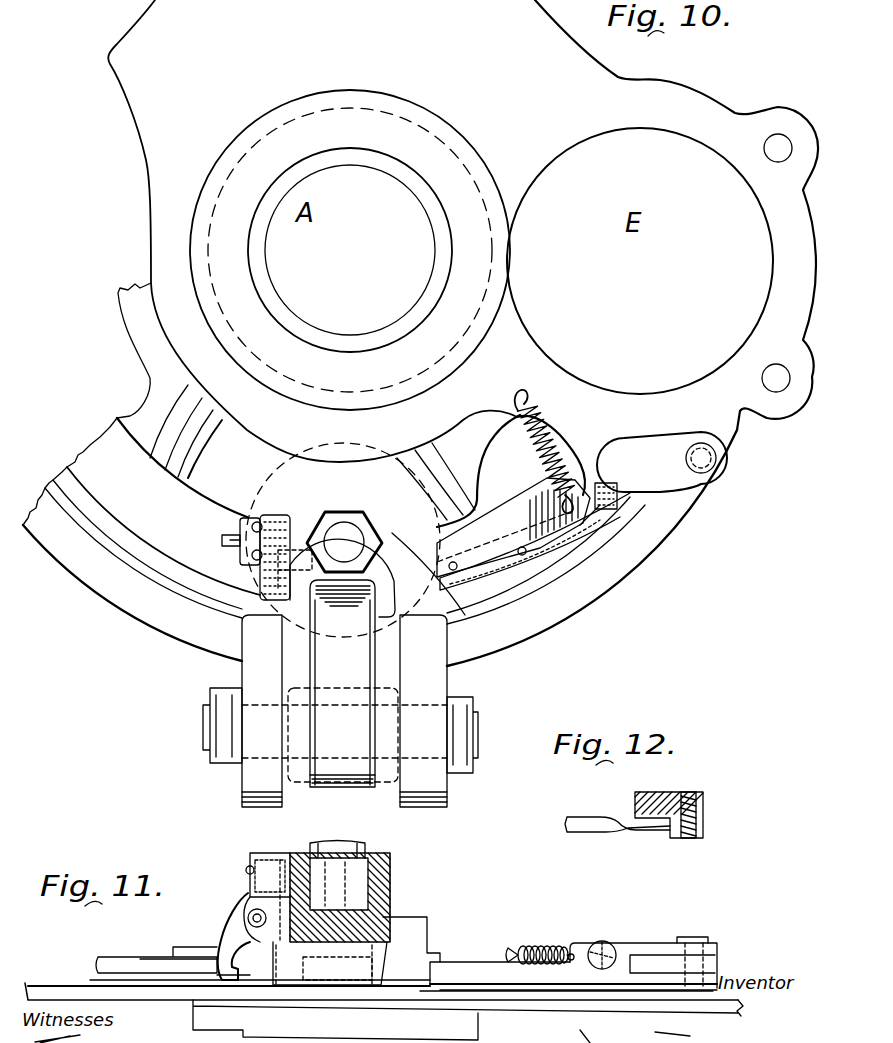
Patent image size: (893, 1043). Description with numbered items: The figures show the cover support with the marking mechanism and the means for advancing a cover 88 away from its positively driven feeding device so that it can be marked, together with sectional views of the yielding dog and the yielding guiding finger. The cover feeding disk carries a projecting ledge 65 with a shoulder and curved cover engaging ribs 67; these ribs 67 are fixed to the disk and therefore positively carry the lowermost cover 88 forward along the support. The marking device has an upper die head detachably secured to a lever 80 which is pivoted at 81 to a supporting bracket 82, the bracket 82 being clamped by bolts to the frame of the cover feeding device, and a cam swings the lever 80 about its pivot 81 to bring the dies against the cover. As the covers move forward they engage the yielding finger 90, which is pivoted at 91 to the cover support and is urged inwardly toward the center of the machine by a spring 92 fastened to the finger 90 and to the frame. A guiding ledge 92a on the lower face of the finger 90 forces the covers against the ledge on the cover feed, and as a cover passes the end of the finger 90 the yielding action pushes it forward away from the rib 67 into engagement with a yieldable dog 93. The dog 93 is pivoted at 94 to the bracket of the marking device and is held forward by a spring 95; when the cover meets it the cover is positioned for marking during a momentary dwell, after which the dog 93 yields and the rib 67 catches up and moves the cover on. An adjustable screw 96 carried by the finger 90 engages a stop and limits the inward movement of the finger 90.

In FIG. 10, the projecting ledge 65 is at (489, 433).
In FIG. 10, the cover engaging ribs 67 is at (462, 497).
In FIG. 10, the lever 80 is at (340, 772).
In FIG. 10, the pivot 81 is at (206, 736).
In FIG. 10, the supporting bracket 82 is at (258, 780).
In FIG. 10, the cover 88 is at (268, 493).
In FIG. 10, the yielding finger 90 is at (513, 558).
In FIG. 12, the yielding finger 90 is at (635, 797).
In FIG. 11, the yielding finger 90 is at (487, 972).
In FIG. 10, the pivot 91 is at (703, 480).
In FIG. 11, the pivot 91 is at (688, 937).
In FIG. 10, the spring 92 is at (553, 447).
In FIG. 11, the spring 92 is at (545, 949).
In FIG. 10, the guiding ledge 92a is at (573, 548).
In FIG. 12, the guiding ledge 92a is at (692, 839).
In FIG. 11, the guiding ledge 92a is at (520, 992).
In FIG. 11, the yieldable dog 93 is at (223, 957).
In FIG. 11, the pivot 94 is at (247, 893).
In FIG. 10, the spring 95 is at (227, 539).
In FIG. 11, the spring 95 is at (234, 925).
In FIG. 10, the adjustable screw 96 is at (627, 499).